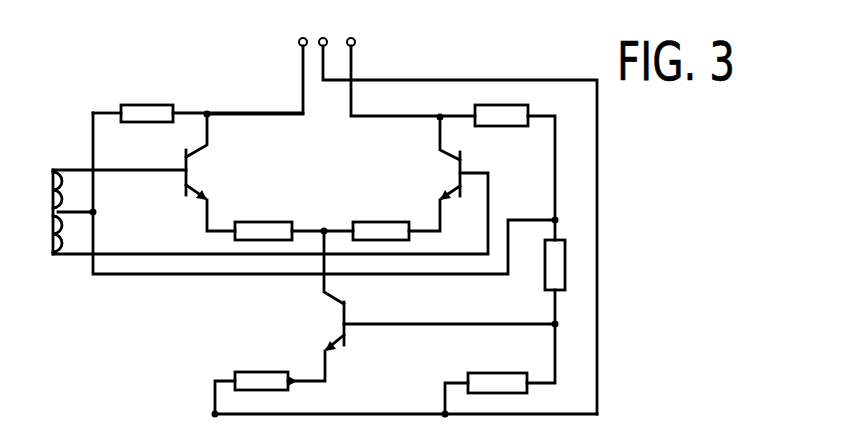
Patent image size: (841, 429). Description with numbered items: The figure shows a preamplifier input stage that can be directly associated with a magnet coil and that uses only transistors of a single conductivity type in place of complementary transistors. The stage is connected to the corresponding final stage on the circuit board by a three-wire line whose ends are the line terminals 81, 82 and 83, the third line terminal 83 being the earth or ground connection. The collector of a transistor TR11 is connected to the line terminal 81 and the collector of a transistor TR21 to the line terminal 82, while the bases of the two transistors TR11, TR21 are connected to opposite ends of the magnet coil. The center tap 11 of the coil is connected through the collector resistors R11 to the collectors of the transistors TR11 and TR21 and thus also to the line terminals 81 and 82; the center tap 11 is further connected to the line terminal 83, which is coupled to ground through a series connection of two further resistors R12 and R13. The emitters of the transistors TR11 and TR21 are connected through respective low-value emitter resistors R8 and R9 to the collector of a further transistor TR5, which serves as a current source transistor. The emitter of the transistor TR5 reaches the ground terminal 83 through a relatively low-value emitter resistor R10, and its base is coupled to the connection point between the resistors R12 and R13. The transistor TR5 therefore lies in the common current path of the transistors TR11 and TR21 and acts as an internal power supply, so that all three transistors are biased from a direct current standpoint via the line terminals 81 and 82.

The center tap 11 is at (95, 212).
The line terminal 81 is at (299, 42).
The line terminal 82 is at (355, 42).
The line terminal 83 is at (324, 38).
The emitter resistor R8 is at (294, 217).
The emitter resistor R9 is at (396, 217).
The emitter resistor R10 is at (255, 378).
The collector resistor R11 is at (324, 153).
The resistor R12 is at (531, 300).
The resistor R13 is at (485, 379).
The current source transistor TR5 is at (413, 306).
The transistor TR11 is at (216, 172).
The transistor TR21 is at (427, 158).